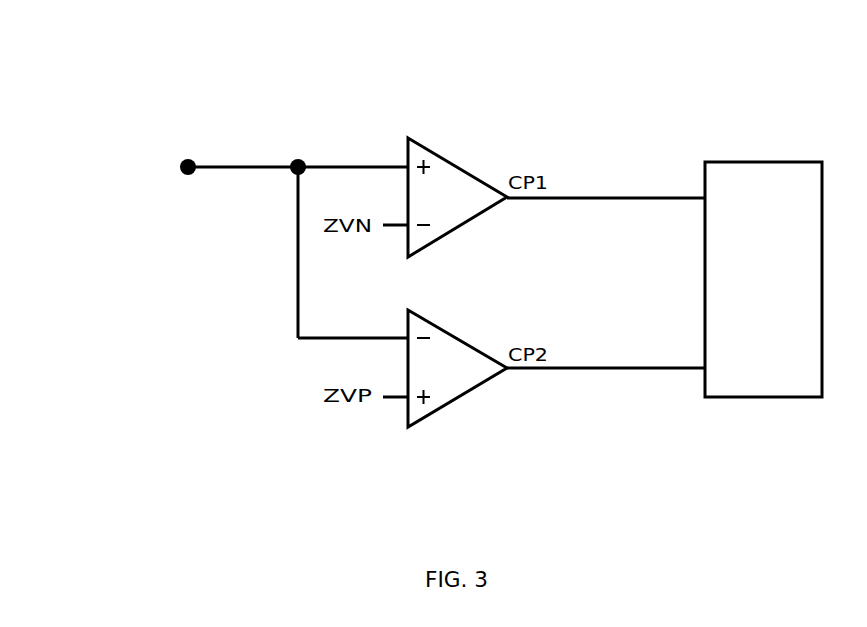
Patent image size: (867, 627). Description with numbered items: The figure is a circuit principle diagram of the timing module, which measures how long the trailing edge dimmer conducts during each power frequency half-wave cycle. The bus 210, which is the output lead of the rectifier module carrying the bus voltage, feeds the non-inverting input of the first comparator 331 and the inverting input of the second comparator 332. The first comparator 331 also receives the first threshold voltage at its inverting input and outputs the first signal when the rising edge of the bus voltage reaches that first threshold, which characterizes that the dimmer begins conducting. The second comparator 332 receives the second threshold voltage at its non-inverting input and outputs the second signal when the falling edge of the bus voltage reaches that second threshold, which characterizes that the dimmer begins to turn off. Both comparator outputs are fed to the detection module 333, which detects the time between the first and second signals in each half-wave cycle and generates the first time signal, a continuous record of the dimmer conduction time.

The bus 210 is at (178, 160).
The first comparator 331 is at (397, 138).
The second comparator 332 is at (453, 378).
The detection module 333 is at (730, 176).